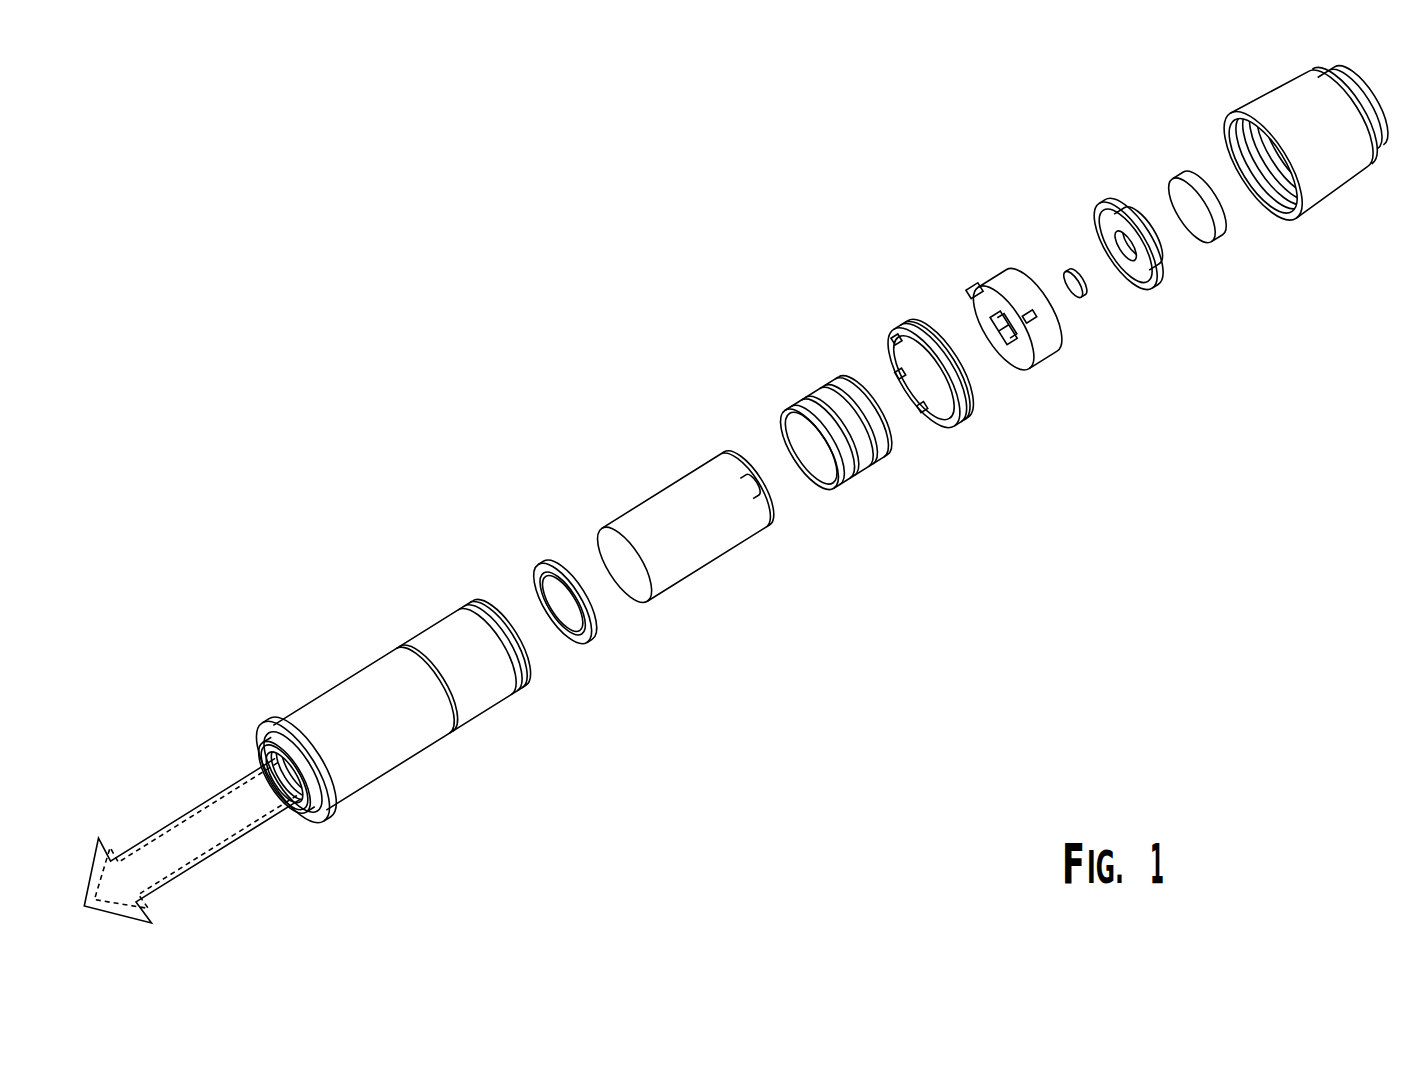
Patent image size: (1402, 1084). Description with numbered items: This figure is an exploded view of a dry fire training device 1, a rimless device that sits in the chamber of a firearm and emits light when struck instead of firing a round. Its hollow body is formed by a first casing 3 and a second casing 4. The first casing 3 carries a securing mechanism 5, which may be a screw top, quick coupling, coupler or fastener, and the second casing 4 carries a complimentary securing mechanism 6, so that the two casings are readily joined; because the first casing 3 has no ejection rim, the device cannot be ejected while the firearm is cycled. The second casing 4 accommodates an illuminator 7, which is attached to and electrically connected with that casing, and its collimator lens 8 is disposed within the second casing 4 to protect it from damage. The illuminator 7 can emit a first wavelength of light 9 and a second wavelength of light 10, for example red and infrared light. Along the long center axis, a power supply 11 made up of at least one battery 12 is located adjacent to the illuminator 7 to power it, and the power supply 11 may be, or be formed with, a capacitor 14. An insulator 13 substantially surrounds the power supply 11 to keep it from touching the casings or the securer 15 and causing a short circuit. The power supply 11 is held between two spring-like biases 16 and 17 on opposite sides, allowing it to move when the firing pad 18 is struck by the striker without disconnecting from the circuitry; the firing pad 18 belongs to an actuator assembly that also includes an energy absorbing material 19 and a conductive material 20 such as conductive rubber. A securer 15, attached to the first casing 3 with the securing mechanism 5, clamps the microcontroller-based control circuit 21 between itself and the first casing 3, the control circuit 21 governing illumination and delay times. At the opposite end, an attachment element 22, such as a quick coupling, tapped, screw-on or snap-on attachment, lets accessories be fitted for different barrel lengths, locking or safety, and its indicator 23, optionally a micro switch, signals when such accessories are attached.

The dry fire training device 1 is at (1283, 57).
The first casing 3 is at (1305, 190).
The second casing 4 is at (398, 677).
The securing mechanism 5 is at (1263, 208).
The complimentary securing mechanism 6 is at (472, 594).
The illuminator 7 is at (660, 504).
The collimator lens 8 is at (585, 641).
The first wavelength of light 9 is at (212, 851).
The second wavelength of light 10 is at (155, 895).
The power supply 11 is at (879, 492).
The battery 12 is at (789, 347).
The insulator 13 is at (819, 393).
The capacitor 14 is at (790, 408).
The securer 15 is at (960, 417).
The spring-like bias 16 is at (970, 307).
The spring-like bias 17 is at (772, 479).
The firing pad 18 is at (1182, 170).
The energy absorbing material 19 is at (1153, 292).
The conductive material 20 is at (1070, 265).
The control circuit 21 is at (1017, 302).
The attachment element 22 is at (272, 727).
The indicator 23 is at (295, 812).